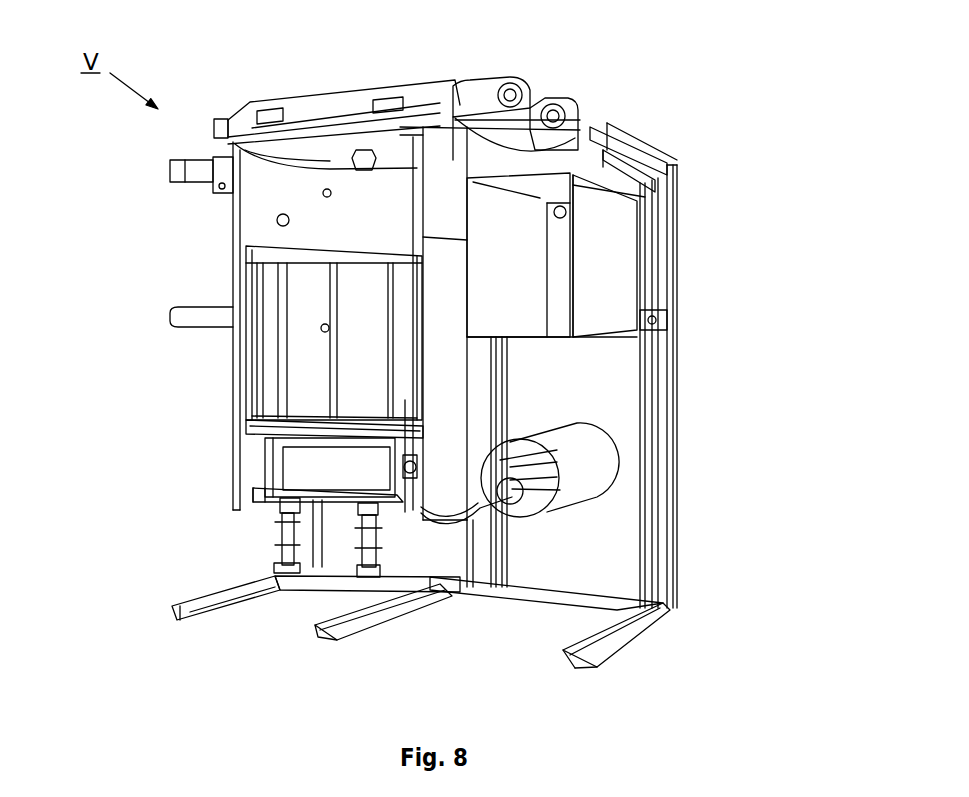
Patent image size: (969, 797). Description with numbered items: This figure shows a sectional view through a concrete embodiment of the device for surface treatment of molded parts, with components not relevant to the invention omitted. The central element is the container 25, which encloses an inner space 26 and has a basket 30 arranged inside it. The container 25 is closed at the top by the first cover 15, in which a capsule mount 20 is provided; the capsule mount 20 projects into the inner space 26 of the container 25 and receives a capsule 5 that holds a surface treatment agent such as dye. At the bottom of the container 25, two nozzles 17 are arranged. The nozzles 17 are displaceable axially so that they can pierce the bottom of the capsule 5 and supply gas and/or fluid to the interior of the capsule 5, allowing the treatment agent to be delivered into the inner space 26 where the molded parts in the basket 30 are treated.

The first cover 15 is at (337, 114).
The inner space 26 is at (358, 221).
The container 25 is at (221, 231).
The basket 30 is at (273, 361).
The capsule mount 20 is at (247, 447).
The capsule 5 is at (311, 469).
The nozzles 17 is at (342, 521).